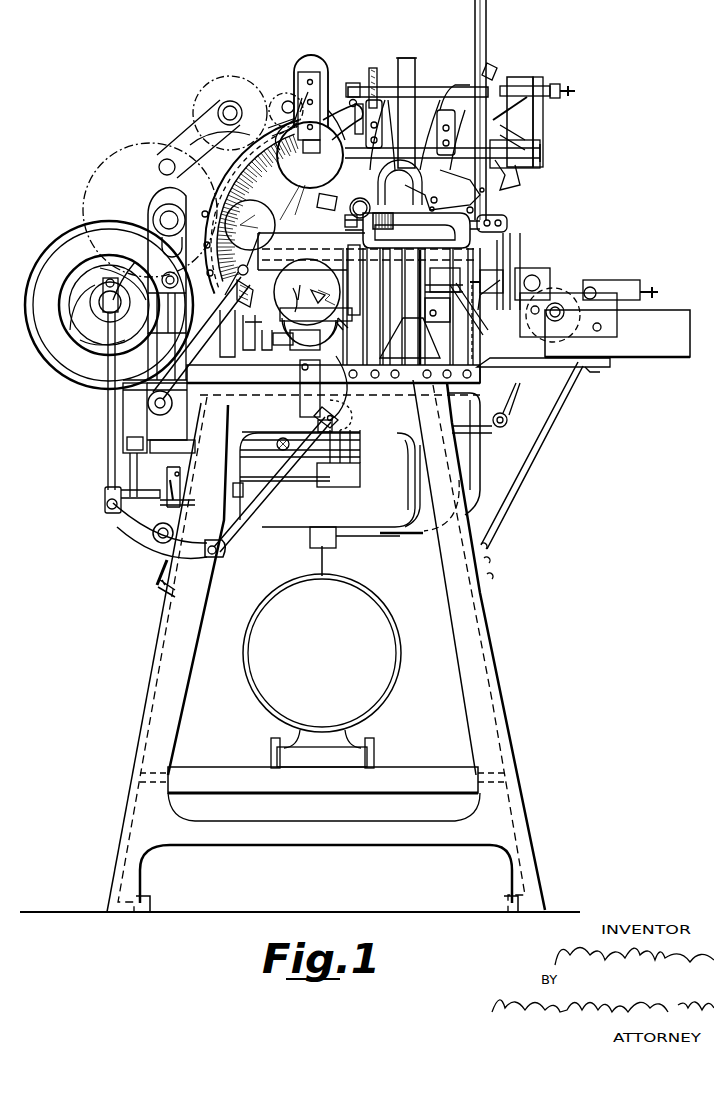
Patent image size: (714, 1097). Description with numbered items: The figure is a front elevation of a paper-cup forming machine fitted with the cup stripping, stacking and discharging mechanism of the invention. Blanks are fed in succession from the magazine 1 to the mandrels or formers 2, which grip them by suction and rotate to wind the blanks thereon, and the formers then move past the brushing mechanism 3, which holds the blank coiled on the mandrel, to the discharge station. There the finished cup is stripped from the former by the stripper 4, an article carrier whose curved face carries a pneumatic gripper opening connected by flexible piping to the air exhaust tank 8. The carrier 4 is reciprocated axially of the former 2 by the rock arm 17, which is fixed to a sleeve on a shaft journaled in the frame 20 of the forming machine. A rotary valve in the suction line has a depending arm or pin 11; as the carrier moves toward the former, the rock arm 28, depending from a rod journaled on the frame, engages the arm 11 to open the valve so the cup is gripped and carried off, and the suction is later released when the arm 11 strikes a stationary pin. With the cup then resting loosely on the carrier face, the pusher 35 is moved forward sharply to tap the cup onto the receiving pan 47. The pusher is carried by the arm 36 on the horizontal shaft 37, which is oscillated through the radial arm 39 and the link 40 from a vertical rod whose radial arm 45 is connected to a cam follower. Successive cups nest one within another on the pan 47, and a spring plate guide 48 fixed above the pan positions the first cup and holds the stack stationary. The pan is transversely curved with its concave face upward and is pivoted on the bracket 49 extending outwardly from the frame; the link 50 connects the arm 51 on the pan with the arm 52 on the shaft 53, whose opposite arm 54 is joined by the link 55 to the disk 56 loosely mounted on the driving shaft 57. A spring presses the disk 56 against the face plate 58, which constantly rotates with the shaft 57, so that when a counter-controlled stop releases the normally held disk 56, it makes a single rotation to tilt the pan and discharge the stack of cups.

The magazine 1 is at (415, 100).
The mandrels or formers 2 is at (362, 208).
The brushing mechanism 3 is at (262, 140).
The stripper 4 is at (315, 356).
The air exhaust tank 8 is at (322, 671).
The arm or pin 11 is at (283, 385).
The rock arm 17 is at (322, 332).
The frame 20 is at (452, 580).
The rock arm 28 is at (210, 323).
The pusher 35 is at (305, 293).
The arm 36 is at (337, 480).
The horizontal shaft 37 is at (292, 473).
The radial arm 39 is at (169, 485).
The link 40 is at (120, 490).
The radial arm 45 is at (130, 440).
The receiving pan 47 is at (346, 405).
The spring plate guide 48 is at (325, 292).
The bracket 49 is at (351, 415).
The link 50 is at (258, 503).
The arm 51 is at (347, 429).
The arm 52 is at (197, 562).
The shaft 53 is at (160, 540).
The arm 54 is at (135, 532).
The link 55 is at (110, 408).
The disk 56 is at (150, 261).
The driving shaft 57 is at (109, 305).
The face plate 58 is at (90, 335).